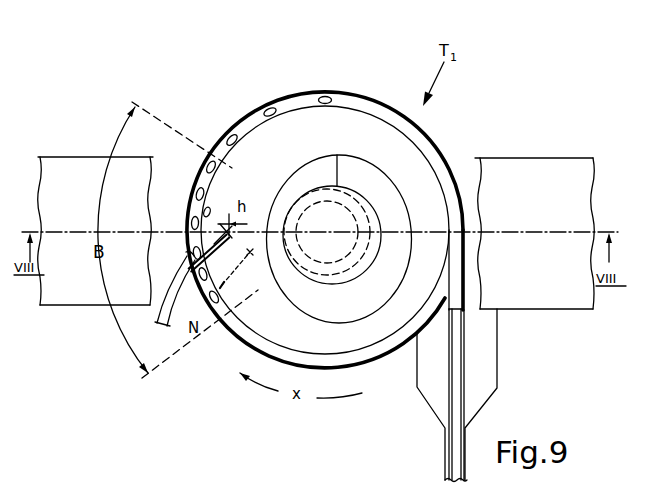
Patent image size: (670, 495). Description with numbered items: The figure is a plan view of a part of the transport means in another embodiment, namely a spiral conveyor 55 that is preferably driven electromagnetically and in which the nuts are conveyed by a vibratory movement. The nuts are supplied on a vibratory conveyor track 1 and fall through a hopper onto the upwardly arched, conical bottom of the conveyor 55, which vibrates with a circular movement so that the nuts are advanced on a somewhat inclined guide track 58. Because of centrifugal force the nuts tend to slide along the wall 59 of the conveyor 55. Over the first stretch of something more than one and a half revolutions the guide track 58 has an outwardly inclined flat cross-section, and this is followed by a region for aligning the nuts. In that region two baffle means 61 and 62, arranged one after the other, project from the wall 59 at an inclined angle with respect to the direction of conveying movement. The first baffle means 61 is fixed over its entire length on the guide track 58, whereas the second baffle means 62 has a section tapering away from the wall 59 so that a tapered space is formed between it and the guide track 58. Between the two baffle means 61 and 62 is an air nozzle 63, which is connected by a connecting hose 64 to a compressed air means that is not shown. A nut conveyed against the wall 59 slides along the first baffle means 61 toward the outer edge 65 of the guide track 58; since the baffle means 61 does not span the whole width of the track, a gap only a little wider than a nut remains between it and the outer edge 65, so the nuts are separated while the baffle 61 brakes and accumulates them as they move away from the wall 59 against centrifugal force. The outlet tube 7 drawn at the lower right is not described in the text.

The vibratory conveyor track 1 is at (60, 165).
The outlet tube / bracket 7 is at (478, 393).
The conveyor 55 is at (258, 109).
The guide track 58 is at (392, 352).
The wall 59 is at (234, 334).
The first baffle means 61 is at (205, 263).
The second baffle means 62 is at (204, 212).
The air nozzle 63 is at (188, 256).
The connecting hose 64 is at (162, 322).
The outer edge 65 is at (247, 262).